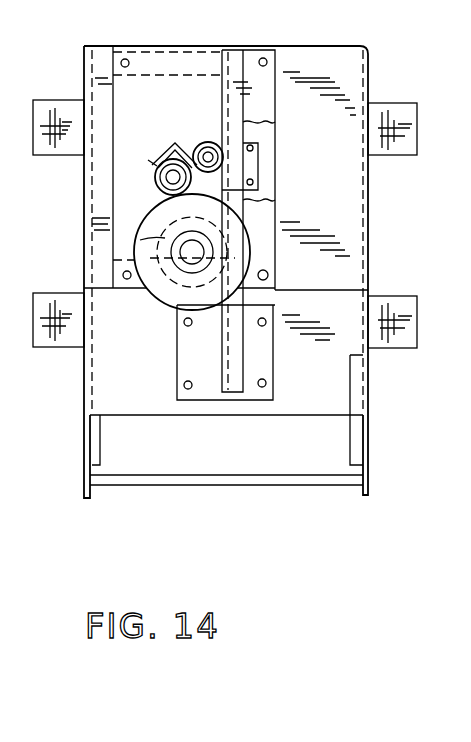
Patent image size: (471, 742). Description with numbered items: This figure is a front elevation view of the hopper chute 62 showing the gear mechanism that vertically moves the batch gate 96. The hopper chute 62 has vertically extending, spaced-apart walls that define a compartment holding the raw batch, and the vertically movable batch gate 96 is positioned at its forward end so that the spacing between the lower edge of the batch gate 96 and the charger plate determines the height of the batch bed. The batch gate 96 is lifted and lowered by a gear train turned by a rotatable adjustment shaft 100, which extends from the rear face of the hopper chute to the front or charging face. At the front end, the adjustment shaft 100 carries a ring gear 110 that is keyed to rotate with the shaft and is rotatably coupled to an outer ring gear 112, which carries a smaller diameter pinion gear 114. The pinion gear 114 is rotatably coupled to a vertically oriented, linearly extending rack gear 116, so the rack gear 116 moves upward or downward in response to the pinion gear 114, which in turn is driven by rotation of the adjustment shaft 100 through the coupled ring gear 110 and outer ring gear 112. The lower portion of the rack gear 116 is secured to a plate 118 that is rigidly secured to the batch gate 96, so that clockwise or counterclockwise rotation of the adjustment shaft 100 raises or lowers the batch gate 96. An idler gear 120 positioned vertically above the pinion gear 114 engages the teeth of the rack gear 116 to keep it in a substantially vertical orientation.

The hopper chute 62 is at (320, 46).
The batch gate 96 is at (147, 415).
The adjustment shaft 100 is at (158, 180).
The ring gear 110 is at (157, 172).
The outer ring gear 112 is at (160, 303).
The pinion gear 114 is at (103, 242).
The rack gear 116 is at (220, 95).
The plate 118 is at (275, 367).
The idler gear 120 is at (207, 148).